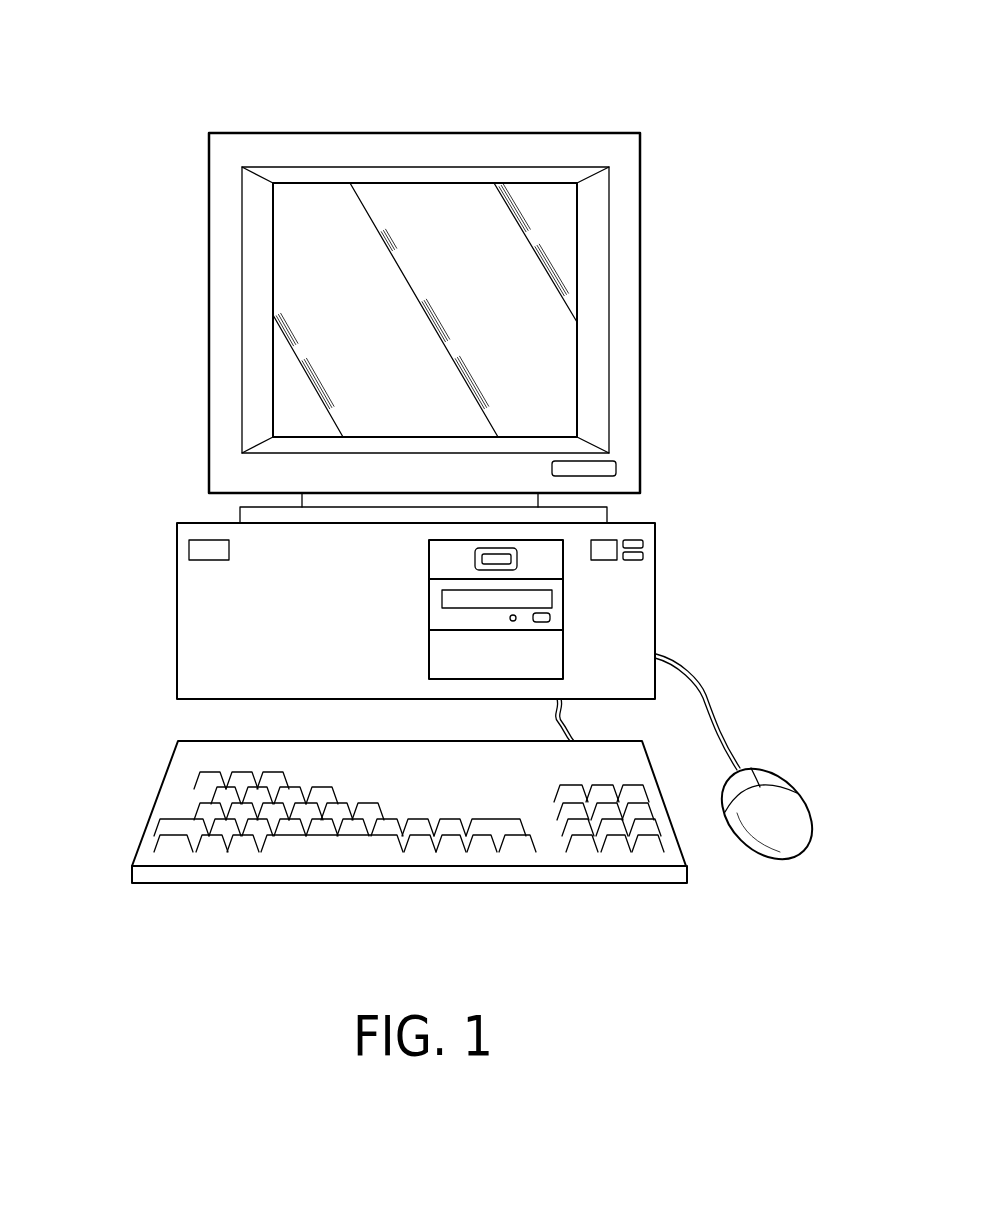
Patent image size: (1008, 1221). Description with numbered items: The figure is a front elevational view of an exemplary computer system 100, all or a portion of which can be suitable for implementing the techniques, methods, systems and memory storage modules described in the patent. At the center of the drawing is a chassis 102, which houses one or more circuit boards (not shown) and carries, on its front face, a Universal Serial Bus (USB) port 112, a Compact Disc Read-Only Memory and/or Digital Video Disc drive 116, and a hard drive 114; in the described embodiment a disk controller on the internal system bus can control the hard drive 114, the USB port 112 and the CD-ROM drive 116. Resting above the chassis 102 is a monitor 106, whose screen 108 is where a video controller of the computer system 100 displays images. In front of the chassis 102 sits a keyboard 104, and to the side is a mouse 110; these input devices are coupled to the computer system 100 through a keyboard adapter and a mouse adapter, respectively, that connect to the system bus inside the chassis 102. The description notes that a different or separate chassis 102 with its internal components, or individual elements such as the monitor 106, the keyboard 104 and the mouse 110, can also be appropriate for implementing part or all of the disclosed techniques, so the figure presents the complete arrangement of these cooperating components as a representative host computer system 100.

The computer system 100 is at (628, 107).
The chassis 102 is at (177, 613).
The keyboard 104 is at (157, 798).
The monitor 106 is at (297, 132).
The screen 108 is at (327, 315).
The mouse 110 is at (792, 800).
The Universal Serial Bus (USB) port 112 is at (516, 560).
The hard drive 114 is at (553, 653).
The Compact Disc Read-Only Memory (CD-ROM) and/or Digital Video Disc (DVD) drive 116 is at (552, 604).